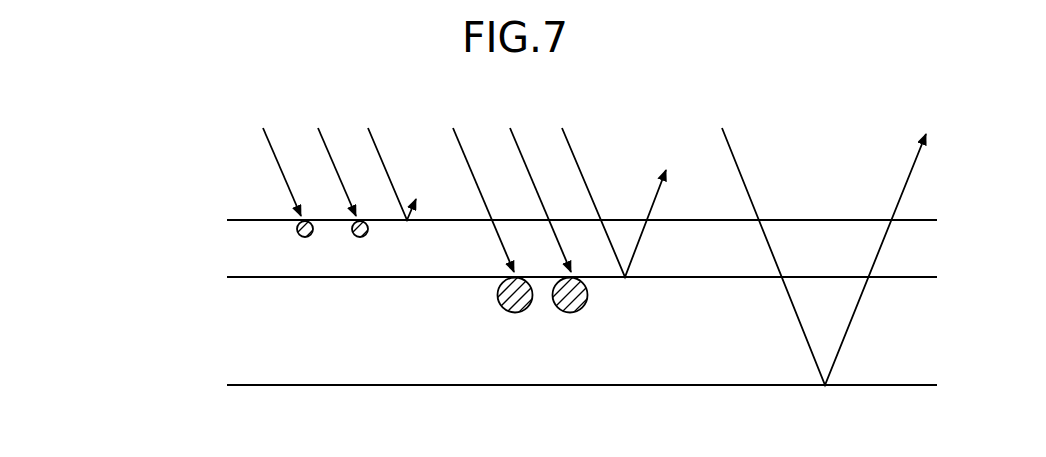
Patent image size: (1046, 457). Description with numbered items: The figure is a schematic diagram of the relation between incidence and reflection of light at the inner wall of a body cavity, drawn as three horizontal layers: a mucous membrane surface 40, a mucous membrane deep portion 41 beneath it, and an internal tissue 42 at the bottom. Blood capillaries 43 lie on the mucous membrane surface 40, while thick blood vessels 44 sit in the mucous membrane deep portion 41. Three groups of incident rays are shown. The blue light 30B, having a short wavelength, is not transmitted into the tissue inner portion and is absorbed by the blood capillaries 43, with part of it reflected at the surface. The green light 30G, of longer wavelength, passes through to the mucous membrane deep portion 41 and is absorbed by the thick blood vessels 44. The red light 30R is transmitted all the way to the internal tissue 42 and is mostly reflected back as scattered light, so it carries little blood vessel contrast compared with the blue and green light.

The blue light 30B is at (240, 131).
The green light 30G is at (443, 131).
The red light 30R is at (814, 236).
The mucous membrane surface 40 is at (263, 220).
The mucous membrane deep portion 41 is at (263, 277).
The internal tissue 42 is at (263, 385).
The blood capillaries 43 is at (373, 237).
The thick blood vessels 44 is at (490, 316).